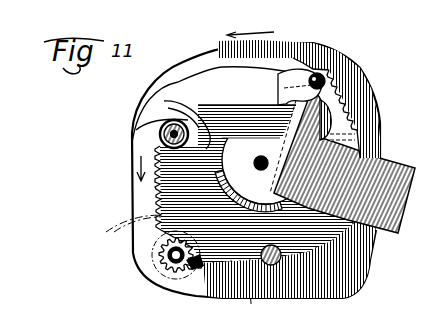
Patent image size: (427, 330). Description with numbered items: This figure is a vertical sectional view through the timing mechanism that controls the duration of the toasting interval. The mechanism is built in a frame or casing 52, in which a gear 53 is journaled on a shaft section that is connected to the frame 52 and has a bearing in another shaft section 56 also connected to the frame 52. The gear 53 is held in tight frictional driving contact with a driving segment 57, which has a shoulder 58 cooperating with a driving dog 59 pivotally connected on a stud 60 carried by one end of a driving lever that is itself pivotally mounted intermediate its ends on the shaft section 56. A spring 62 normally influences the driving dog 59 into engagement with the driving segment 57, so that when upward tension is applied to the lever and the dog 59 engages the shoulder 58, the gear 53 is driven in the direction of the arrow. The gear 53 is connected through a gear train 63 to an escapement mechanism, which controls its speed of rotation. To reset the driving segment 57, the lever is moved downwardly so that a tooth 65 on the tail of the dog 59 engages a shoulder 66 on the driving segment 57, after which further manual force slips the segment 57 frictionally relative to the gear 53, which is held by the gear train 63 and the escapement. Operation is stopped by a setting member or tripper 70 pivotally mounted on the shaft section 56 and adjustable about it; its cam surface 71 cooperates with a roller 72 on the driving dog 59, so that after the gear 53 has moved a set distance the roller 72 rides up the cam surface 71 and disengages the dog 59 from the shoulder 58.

The frame 52 is at (134, 178).
The gear 53 is at (337, 123).
The shaft section 56 is at (252, 150).
The driving segment 57 is at (320, 115).
The shoulder 58 is at (275, 86).
The driving dog 59 is at (270, 52).
The stud 60 is at (140, 137).
The spring 62 is at (152, 126).
The gear train 63 is at (143, 250).
The tooth 65 is at (128, 90).
The shoulder 66 is at (186, 98).
The tripper 70 is at (330, 140).
The cam surface 71 is at (312, 68).
The roller 72 is at (318, 64).